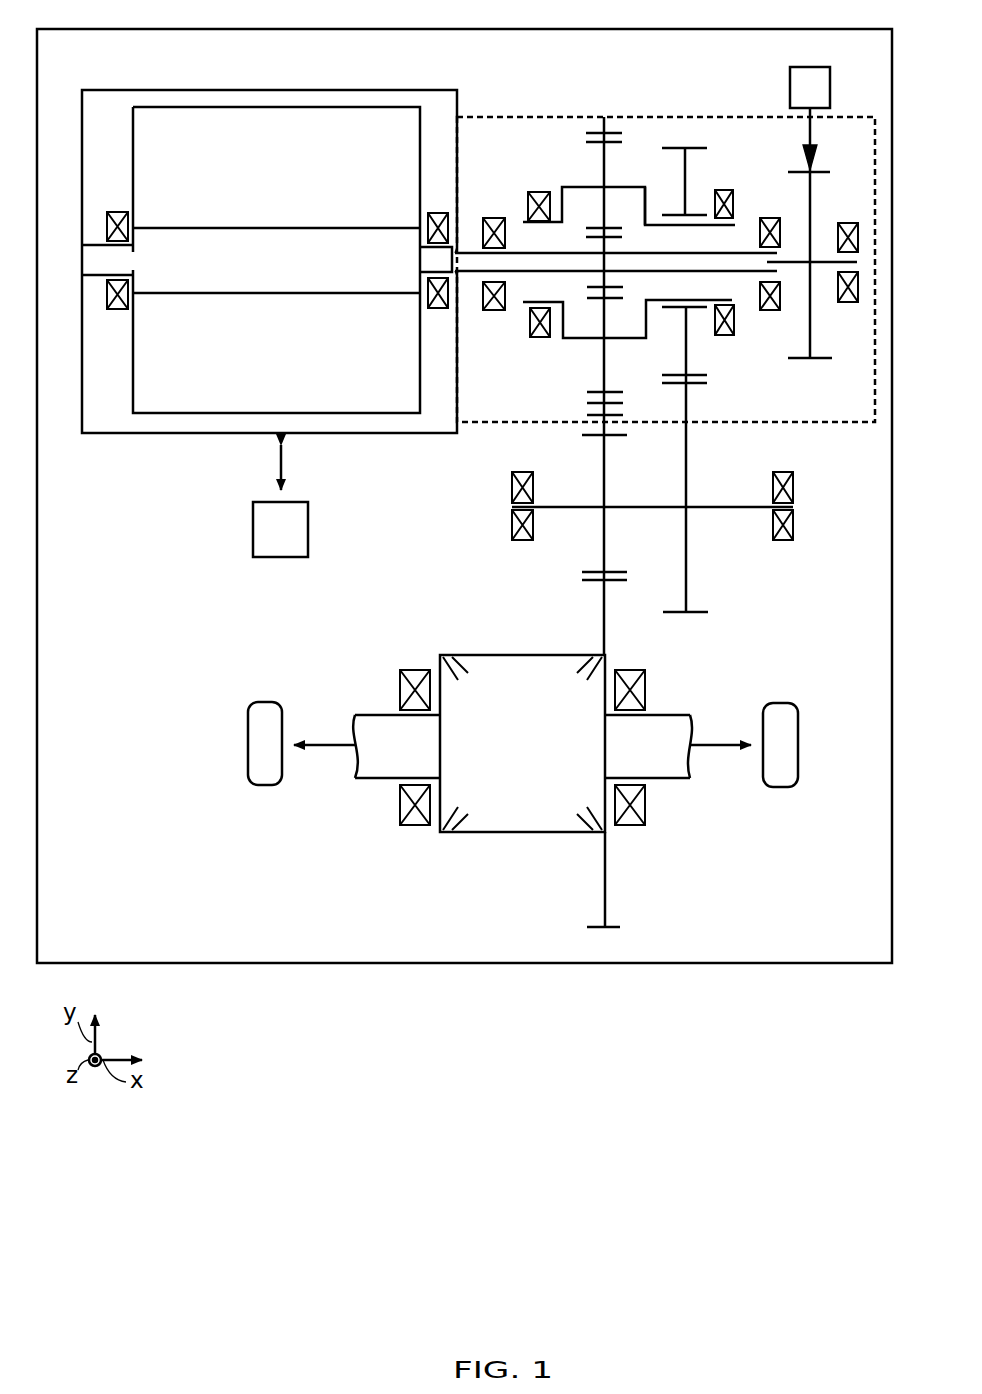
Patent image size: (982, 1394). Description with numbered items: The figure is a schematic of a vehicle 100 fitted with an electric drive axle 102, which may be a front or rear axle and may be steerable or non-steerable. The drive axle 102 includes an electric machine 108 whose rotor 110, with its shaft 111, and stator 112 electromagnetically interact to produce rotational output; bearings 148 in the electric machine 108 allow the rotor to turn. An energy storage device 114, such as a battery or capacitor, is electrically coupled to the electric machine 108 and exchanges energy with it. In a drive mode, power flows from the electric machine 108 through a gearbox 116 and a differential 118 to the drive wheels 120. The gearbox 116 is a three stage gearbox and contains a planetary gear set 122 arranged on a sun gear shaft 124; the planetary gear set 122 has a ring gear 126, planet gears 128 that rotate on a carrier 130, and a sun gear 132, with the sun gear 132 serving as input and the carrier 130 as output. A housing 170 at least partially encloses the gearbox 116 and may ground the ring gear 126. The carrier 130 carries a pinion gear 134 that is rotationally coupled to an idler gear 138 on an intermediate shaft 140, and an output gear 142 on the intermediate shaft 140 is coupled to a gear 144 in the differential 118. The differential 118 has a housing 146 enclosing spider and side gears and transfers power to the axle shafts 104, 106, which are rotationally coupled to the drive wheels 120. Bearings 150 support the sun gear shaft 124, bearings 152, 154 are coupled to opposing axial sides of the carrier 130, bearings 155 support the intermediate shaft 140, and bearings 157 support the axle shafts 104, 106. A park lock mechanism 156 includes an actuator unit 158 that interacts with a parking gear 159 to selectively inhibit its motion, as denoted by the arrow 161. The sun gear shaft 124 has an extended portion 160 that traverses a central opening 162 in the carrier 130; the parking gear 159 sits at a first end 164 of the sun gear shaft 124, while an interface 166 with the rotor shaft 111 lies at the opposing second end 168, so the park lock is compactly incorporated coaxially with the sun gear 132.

The vehicle 100 is at (44, 30).
The electric drive axle 102 is at (104, 869).
The shaft section 104 is at (366, 715).
The shaft section 106 is at (690, 712).
The electric machine 108 is at (82, 130).
The rotor 110 is at (276, 260).
The shaft 111 is at (146, 228).
The stator 112 is at (284, 367).
The energy storage device 114 is at (308, 528).
The gearbox 116 is at (666, 228).
The differential 118 is at (523, 743).
The drive wheels 120 is at (264, 702).
The planetary gear set 122 is at (648, 347).
The sun gear shaft 124 is at (571, 274).
The ring gear 126 is at (602, 117).
The planet gears 128 is at (605, 178).
The carrier 130 is at (650, 200).
The sun gear 132 is at (586, 236).
The pinion gear 134 is at (675, 148).
The idler gear 138 is at (690, 390).
The intermediate shaft 140 is at (733, 506).
The output gear 142 is at (607, 487).
The gear 144 is at (603, 622).
The housing 146 is at (535, 655).
The bearings 148 is at (116, 212).
The bearings 150 is at (494, 218).
The bearings 152 is at (541, 192).
The bearings 154 is at (724, 190).
The bearings 155 is at (781, 472).
The park lock mechanism 156 is at (820, 208).
The bearings 157 is at (414, 670).
The actuator unit 158 is at (790, 100).
The parking gear 159 is at (812, 193).
The extended portion 160 is at (697, 278).
The arrow 161 is at (816, 138).
The central opening 162 is at (733, 284).
The first end 164 is at (783, 268).
The interface 166 is at (457, 278).
The second end 168 is at (463, 246).
The housing 170 is at (520, 117).